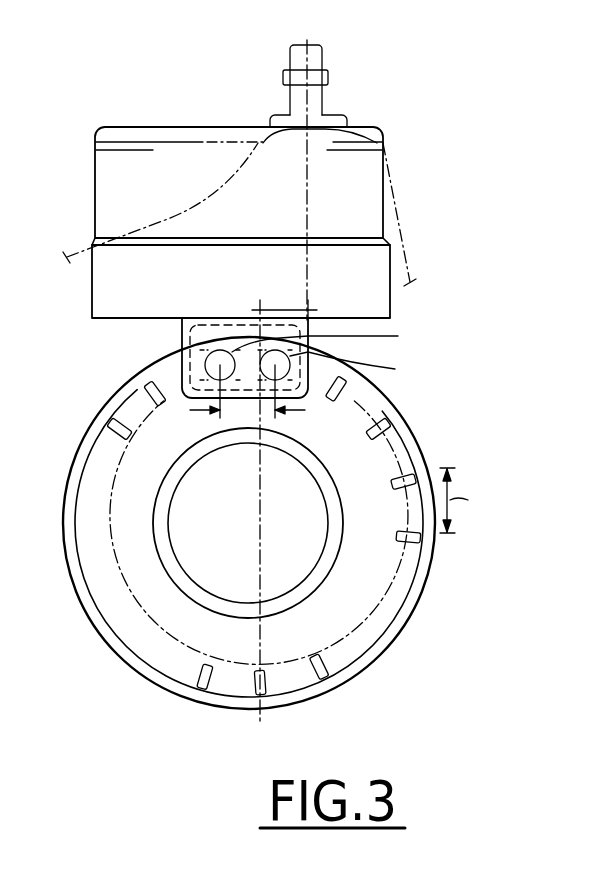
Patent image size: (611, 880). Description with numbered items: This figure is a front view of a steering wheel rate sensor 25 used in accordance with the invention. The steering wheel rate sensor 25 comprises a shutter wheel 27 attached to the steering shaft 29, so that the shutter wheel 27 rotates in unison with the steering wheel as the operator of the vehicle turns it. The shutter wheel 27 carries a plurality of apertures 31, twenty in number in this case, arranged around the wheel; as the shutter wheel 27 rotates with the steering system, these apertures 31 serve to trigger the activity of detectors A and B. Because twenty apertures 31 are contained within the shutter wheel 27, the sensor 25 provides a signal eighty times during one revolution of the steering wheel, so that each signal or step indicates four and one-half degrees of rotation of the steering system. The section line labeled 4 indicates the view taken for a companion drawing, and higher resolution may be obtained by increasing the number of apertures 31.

The steering wheel rate sensor 25 is at (478, 218).
The shutter wheel 27 is at (423, 590).
The steering shaft 29 is at (293, 607).
The apertures 31 is at (403, 478).
The section line 4- 4 is at (307, 40).